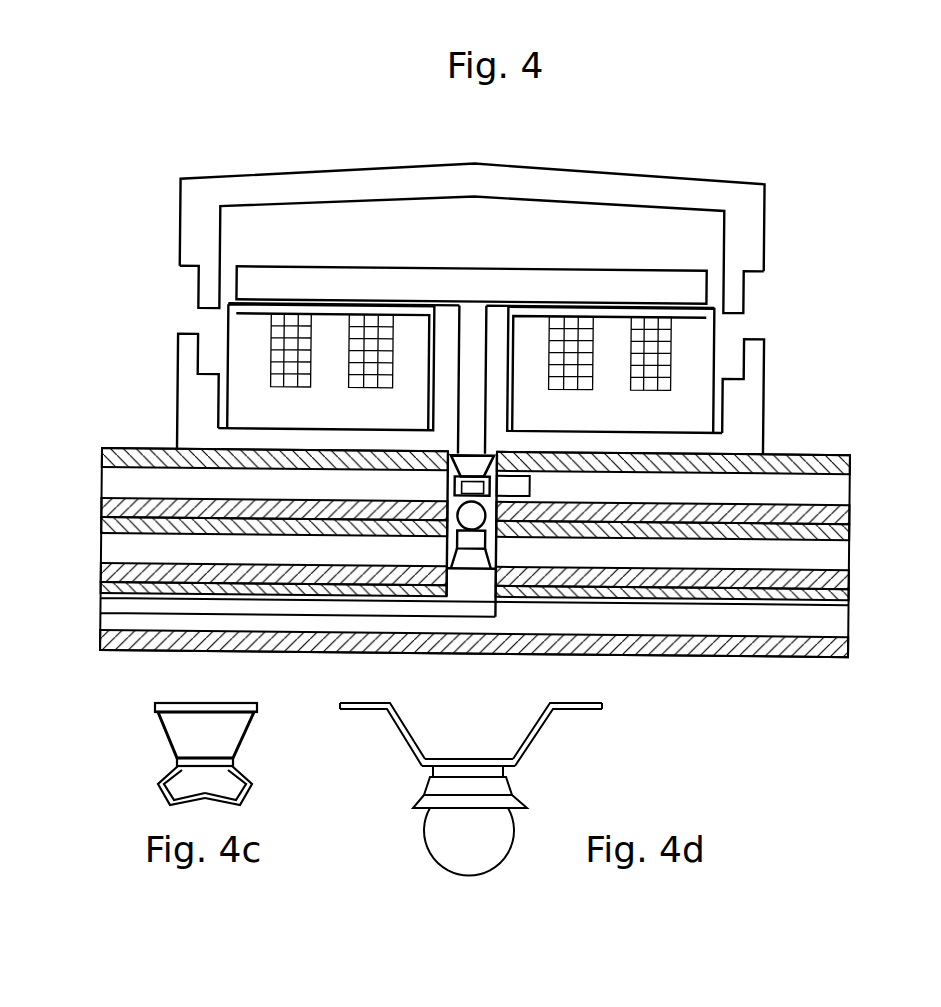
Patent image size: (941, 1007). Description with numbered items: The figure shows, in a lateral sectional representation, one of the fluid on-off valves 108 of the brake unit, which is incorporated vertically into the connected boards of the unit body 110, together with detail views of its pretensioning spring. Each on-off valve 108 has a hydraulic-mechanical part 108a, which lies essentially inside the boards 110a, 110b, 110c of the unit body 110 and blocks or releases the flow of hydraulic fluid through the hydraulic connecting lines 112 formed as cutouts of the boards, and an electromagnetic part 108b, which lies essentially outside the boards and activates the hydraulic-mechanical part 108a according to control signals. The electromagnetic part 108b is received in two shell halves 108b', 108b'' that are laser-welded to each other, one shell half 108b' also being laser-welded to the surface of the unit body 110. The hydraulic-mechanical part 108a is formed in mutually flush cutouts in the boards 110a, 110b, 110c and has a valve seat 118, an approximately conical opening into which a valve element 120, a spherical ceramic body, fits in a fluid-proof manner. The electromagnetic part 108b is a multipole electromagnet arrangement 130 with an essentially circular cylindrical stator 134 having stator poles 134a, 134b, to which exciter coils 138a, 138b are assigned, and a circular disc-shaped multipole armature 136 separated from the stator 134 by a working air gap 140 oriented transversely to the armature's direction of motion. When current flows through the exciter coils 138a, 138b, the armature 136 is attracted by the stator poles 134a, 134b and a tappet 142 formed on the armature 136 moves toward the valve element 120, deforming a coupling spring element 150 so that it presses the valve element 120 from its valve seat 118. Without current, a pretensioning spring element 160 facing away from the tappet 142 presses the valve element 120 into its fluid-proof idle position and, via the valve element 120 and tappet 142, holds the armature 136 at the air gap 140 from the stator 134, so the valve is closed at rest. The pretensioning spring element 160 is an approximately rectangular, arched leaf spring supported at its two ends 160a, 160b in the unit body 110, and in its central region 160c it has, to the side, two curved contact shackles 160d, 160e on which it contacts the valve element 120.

In FIG. 4, the fluid on-off valve 108 is at (258, 136).
In FIG. 4, the hydraulic-mechanical part 108a is at (513, 544).
In FIG. 4, the electromagnetic part 108b is at (826, 397).
In FIG. 4, the shell half 108b' is at (123, 367).
In FIG. 4, the shell half 108b'' is at (472, 193).
In FIG. 4, the unit body 110 is at (100, 450).
In FIG. 4, the board 110a is at (100, 470).
In FIG. 4, the board 110b is at (100, 548).
In FIG. 4, the board 110c is at (100, 597).
In FIG. 4, the hydraulic connecting line 112 is at (237, 606).
In FIG. 4, the valve seat 118 is at (478, 508).
In FIG. 4, the valve element 120 is at (520, 496).
In FIG. 4D, the valve element 120 is at (428, 832).
In FIG. 4, the multipole electromagnet arrangement 130 is at (707, 301).
In FIG. 4, the stator 134 is at (693, 332).
In FIG. 4, the stator pole 134a is at (693, 332).
In FIG. 4, the stator pole 134b is at (332, 328).
In FIG. 4, the armature 136 is at (697, 284).
In FIG. 4, the exciter coil 138a is at (610, 325).
In FIG. 4, the exciter coil 138b is at (290, 373).
In FIG. 4, the working air gap 140 is at (578, 325).
In FIG. 4, the tappet 142 is at (472, 306).
In FIG. 4, the coupling spring element 150 is at (447, 455).
In FIG. 4, the pretensioning spring element 160 is at (440, 507).
In FIG. 4C, the end of pretensioning spring element 160a is at (190, 700).
In FIG. 4D, the end of pretensioning spring element 160a is at (339, 710).
In FIG. 4D, the end of pretensioning spring element 160b is at (602, 713).
In FIG. 4C, the central region of pretensioning spring element 160c is at (208, 755).
In FIG. 4D, the central region of pretensioning spring element 160c is at (468, 757).
In FIG. 4C, the contact shackle 160d is at (160, 783).
In FIG. 4C, the contact shackle 160e is at (247, 783).
In FIG. 4D, the contact shackle 160e is at (510, 783).